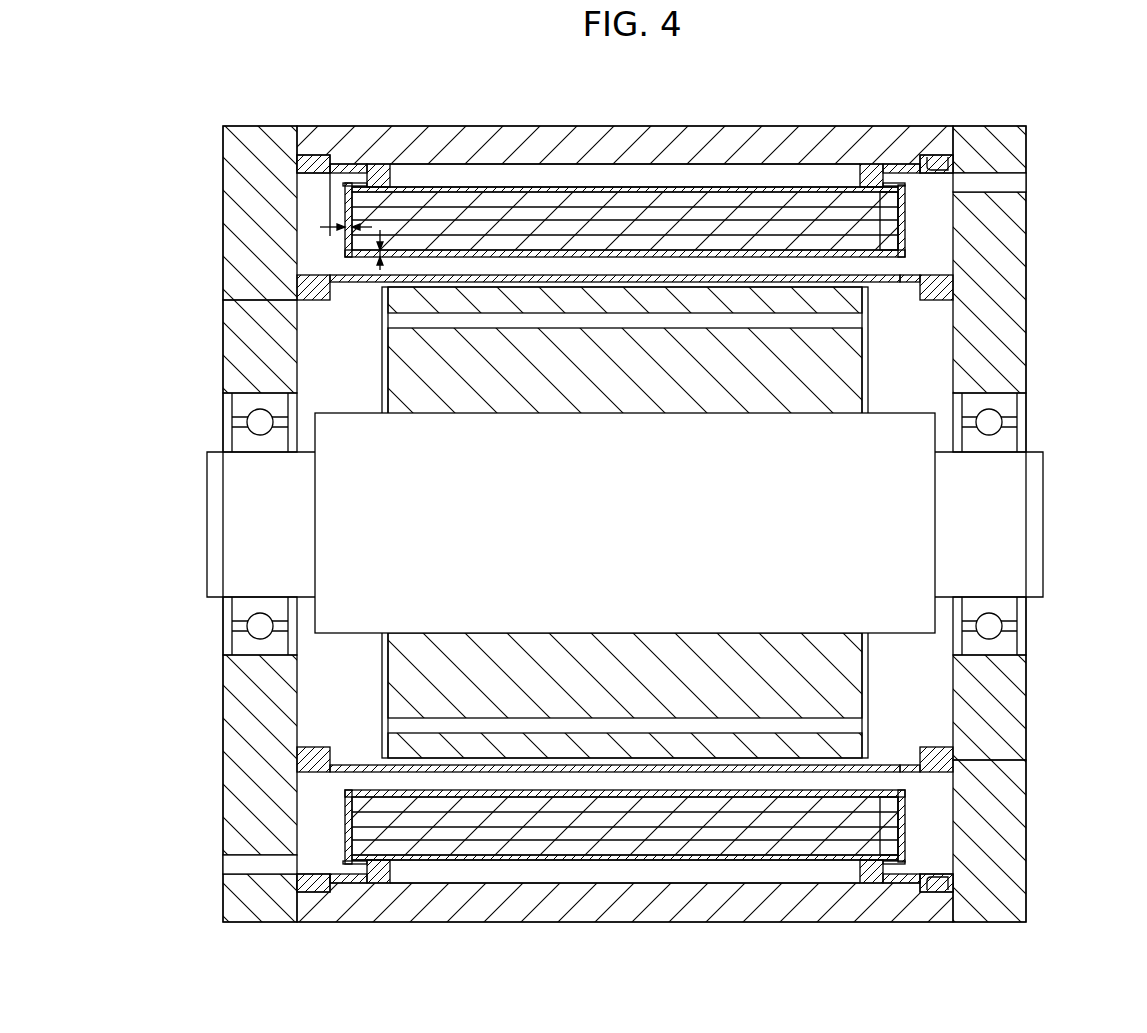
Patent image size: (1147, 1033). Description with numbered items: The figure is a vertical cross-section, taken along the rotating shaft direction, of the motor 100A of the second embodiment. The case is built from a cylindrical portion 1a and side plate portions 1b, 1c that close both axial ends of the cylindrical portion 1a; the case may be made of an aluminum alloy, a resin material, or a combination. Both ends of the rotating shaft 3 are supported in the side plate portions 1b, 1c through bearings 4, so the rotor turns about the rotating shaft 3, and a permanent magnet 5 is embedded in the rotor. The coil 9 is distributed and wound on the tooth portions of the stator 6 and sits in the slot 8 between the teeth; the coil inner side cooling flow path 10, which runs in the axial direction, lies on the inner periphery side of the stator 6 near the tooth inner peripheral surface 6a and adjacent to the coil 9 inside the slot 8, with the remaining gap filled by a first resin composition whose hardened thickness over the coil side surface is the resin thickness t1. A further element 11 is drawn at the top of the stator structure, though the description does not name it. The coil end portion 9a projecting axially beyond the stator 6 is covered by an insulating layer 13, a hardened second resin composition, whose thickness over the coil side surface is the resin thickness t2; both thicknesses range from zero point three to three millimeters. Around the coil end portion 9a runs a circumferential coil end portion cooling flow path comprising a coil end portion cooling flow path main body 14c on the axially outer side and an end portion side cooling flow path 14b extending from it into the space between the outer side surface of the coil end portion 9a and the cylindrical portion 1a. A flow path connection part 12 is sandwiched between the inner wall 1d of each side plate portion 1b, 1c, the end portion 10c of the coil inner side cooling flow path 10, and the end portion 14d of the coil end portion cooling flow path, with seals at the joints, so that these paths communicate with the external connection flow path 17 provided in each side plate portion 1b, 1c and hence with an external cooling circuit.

The motor 100A is at (208, 114).
The cylindrical portion 1a is at (598, 127).
The side plate portion 1b is at (222, 258).
The side plate portion 1c is at (1027, 685).
The inner wall 1d is at (313, 365).
The rotating shaft 3 is at (1028, 480).
The bearing 4 is at (232, 628).
The permanent magnet 5 is at (400, 725).
The stator 6 is at (673, 177).
The tooth inner peripheral surface 6a is at (728, 188).
The slot 8 is at (555, 188).
The coil 9 is at (803, 203).
The coil end portion 9a is at (887, 238).
The coil inner side cooling flow path 10 is at (887, 267).
The end portion of the coil inner side cooling flow path 10c is at (937, 280).
The insulating layer 11 is at (498, 187).
The flow path connection part 12 is at (317, 303).
The insulating layer 13 is at (907, 197).
The end portion side cooling flow path 14b is at (900, 180).
The coil end portion cooling flow path main body 14c is at (913, 227).
The end portion of the coil end portion cooling flow path 14d is at (940, 162).
The external connection flow path 17 is at (250, 865).
The resin thickness t1 is at (380, 270).
The resin thickness t2 is at (340, 204).